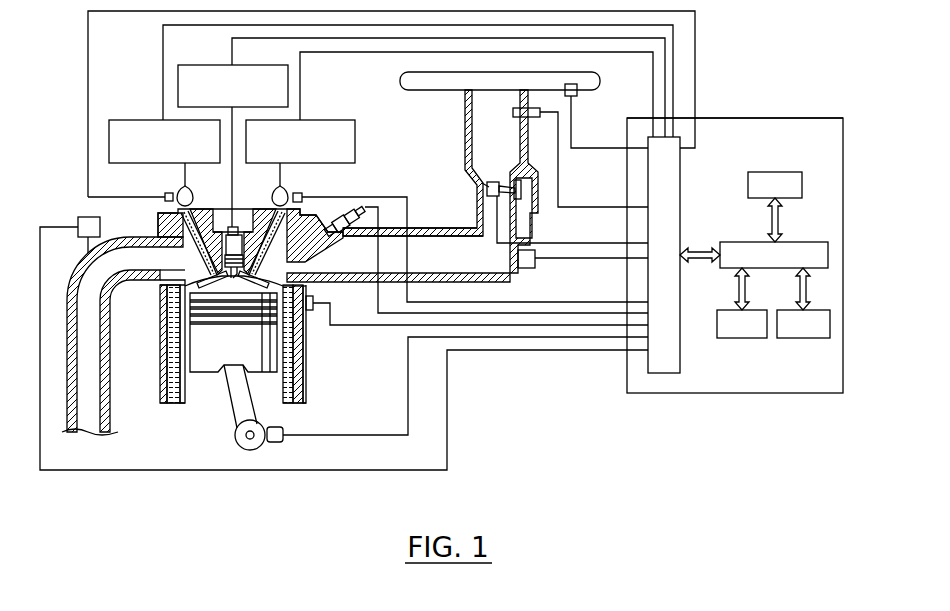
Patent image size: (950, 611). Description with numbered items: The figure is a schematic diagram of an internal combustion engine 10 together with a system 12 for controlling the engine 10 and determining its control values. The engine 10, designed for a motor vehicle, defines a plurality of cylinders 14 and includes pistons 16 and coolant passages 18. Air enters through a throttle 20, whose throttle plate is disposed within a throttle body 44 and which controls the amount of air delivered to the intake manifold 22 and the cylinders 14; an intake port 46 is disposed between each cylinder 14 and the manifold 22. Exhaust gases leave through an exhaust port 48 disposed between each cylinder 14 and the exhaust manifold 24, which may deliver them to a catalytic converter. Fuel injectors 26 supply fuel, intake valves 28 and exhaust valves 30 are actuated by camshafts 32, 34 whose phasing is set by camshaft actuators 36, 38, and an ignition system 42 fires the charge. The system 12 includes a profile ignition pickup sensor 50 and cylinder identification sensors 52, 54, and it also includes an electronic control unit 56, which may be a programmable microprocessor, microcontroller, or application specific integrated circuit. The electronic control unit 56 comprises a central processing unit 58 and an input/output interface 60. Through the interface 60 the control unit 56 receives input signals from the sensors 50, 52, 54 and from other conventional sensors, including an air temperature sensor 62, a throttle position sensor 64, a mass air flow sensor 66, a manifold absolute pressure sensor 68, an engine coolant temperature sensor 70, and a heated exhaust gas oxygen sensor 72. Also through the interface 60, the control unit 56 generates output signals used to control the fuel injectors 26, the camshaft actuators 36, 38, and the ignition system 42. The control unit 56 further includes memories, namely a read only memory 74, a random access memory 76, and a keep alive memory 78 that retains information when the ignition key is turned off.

The internal combustion engine 10 is at (59, 184).
The system 12 is at (829, 98).
The cylinders 14 is at (190, 408).
The pistons 16 is at (217, 368).
The coolant passages 18 is at (305, 361).
The throttle 20 is at (408, 104).
The intake manifold 22 is at (435, 228).
The exhaust manifold 24 is at (108, 363).
The fuel injectors 26 is at (353, 212).
The intake valves 28 is at (242, 326).
The exhaust valves 30 is at (166, 300).
The camshaft 32 is at (273, 190).
The camshaft 34 is at (193, 190).
The camshaft actuator 36 is at (329, 120).
The camshaft actuator 38 is at (126, 120).
The ignition system 42 is at (191, 65).
The throttle body 44 is at (463, 133).
The intake port 46 is at (282, 268).
The exhaust port 48 is at (195, 264).
The profile ignition pickup sensor 50 is at (284, 430).
The cylinder identification sensor 52 is at (301, 193).
The cylinder identification sensor 54 is at (165, 194).
The electronic control unit 56 is at (733, 118).
The central processing unit 58 is at (730, 242).
The input/output interface 60 is at (682, 182).
The air temperature sensor 62 is at (578, 92).
The throttle position sensor 64 is at (495, 182).
The mass air flow sensor 66 is at (515, 107).
The manifold absolute pressure sensor 68 is at (540, 266).
The engine coolant temperature sensor 70 is at (317, 302).
The heated exhaust gas oxygen sensor 72 is at (77, 219).
The read only memory 74 is at (787, 172).
The random access memory 76 is at (745, 338).
The keep alive memory 78 is at (803, 338).